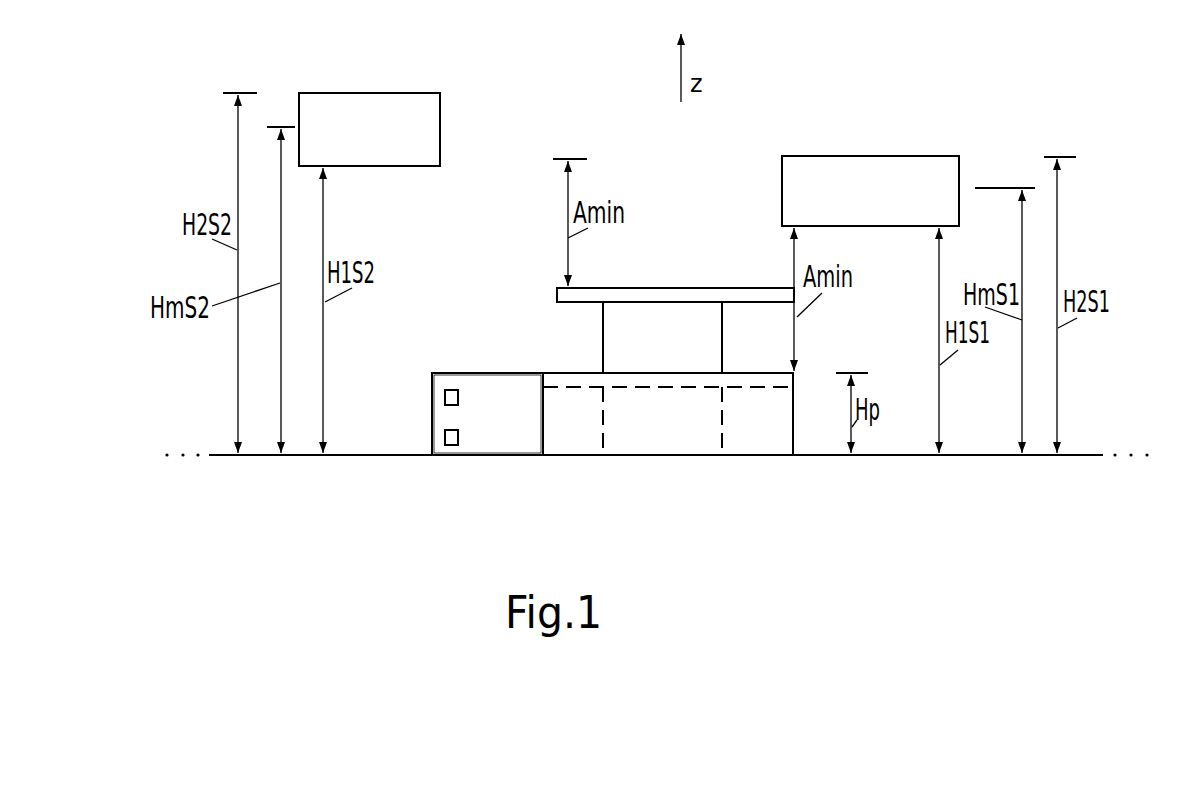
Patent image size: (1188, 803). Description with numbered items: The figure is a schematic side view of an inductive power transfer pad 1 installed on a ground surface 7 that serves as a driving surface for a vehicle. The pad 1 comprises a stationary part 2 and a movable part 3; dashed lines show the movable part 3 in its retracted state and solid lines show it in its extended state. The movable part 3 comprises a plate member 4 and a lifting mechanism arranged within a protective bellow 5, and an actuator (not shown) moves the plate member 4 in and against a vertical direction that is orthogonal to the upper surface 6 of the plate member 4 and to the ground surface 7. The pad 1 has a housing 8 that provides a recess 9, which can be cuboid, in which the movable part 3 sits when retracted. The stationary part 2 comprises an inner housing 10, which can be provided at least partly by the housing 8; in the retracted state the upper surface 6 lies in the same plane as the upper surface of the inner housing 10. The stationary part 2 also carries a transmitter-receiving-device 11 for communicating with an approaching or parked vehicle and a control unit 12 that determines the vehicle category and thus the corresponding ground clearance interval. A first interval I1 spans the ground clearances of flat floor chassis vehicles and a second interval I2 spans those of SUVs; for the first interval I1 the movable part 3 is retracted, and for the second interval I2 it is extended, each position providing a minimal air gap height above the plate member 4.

The inductive power transfer pad 1 is at (518, 437).
The stationary part 2 is at (475, 433).
The movable part 3 is at (683, 297).
The plate member 4 is at (655, 297).
The protective bellow 5 is at (725, 345).
The upper surface 6 is at (756, 287).
The ground surface 7 is at (359, 455).
The housing 8 is at (431, 429).
The recess 9 is at (573, 430).
The inner housing 10 is at (485, 395).
The transmitter-receiving-device 11 is at (449, 387).
The control unit 12 is at (451, 448).
The first interval I1 is at (858, 155).
The second interval I2 is at (370, 92).